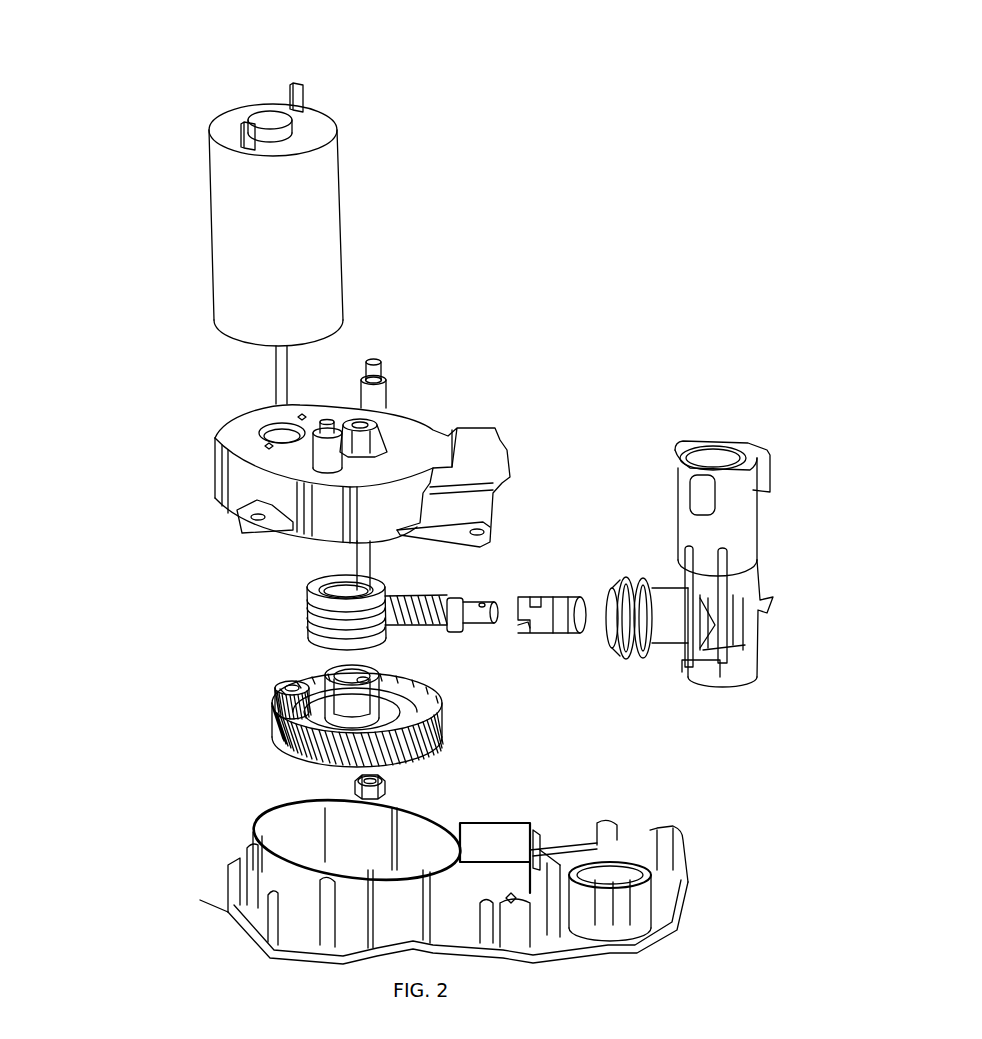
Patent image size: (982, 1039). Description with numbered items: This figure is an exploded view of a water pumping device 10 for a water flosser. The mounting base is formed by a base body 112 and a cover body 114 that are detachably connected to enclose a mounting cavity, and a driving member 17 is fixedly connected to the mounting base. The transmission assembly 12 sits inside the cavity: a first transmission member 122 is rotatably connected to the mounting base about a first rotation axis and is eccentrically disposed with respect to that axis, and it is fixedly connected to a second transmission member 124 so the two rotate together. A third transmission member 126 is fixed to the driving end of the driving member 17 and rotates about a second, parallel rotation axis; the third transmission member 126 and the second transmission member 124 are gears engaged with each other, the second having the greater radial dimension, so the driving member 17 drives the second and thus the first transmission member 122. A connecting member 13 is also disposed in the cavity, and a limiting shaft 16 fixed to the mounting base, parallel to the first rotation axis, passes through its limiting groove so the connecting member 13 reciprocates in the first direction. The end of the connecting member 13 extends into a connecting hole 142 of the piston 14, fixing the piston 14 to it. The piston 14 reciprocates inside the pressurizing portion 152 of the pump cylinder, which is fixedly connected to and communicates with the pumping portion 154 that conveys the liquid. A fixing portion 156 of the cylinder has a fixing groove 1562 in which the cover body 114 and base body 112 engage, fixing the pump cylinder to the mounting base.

The water pumping device 10 is at (118, 140).
The transmission assembly 12 is at (135, 665).
The connecting member 13 is at (307, 607).
The piston 14 is at (566, 633).
The limiting shaft 16 is at (357, 562).
The driving member 17 is at (233, 242).
The base body 112 is at (245, 880).
The cover body 114 is at (214, 466).
The first transmission member 122 is at (330, 673).
The second transmission member 124 is at (440, 736).
The third transmission member 126 is at (273, 713).
The connecting hole 142 is at (537, 597).
The pressurizing portion 152 is at (663, 625).
The pumping portion 154 is at (745, 497).
The fixing portion 156 is at (620, 660).
The fixing groove 1562 is at (632, 579).